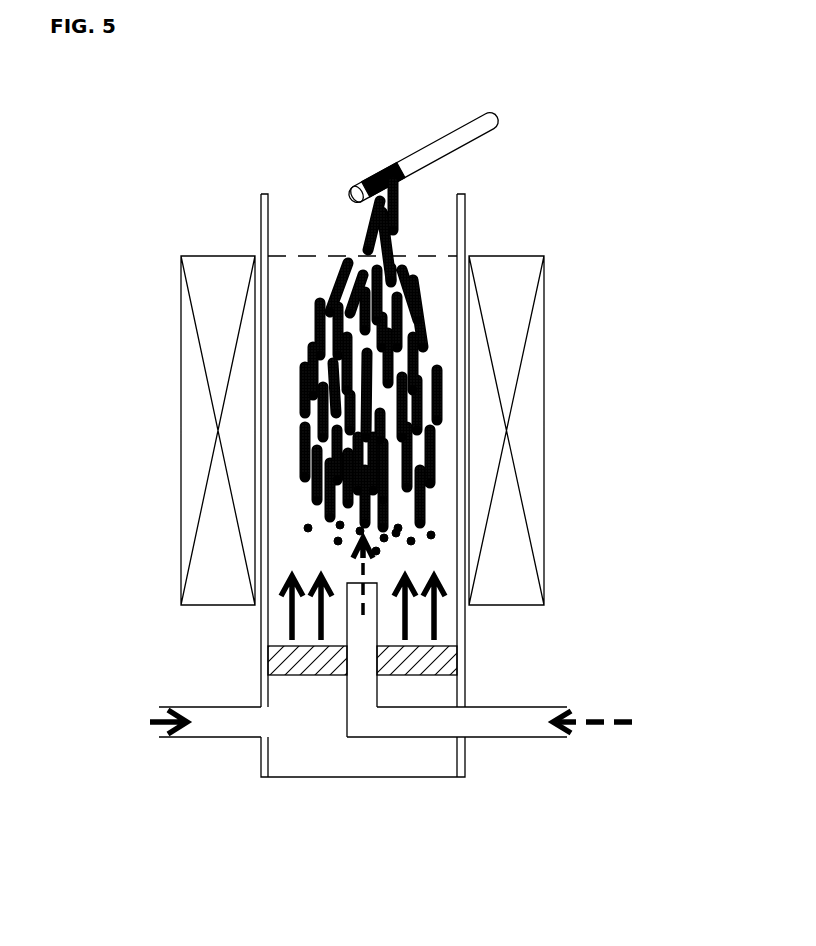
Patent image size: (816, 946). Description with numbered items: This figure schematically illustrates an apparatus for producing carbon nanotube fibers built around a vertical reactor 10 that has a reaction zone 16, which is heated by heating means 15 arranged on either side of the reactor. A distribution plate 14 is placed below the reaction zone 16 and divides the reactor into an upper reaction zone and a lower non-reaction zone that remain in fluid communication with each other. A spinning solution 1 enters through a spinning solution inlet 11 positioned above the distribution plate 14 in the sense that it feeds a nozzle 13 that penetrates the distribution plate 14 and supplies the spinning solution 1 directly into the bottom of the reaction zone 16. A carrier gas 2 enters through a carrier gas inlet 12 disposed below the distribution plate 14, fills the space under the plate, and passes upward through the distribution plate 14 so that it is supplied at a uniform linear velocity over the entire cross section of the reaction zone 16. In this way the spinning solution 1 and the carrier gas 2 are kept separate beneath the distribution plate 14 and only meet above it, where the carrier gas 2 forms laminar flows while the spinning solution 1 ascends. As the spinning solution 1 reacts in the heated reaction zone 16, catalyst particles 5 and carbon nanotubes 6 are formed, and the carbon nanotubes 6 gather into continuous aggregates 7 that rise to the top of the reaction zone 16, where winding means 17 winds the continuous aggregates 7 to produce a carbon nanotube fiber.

The spinning solution 1 is at (365, 572).
The carrier gas 2 is at (292, 622).
The catalyst particles 5 is at (303, 528).
The carbon nanotubes 6 is at (303, 378).
The continuous aggregates of carbon nanotubes 7 is at (391, 176).
The vertical reactor 10 is at (467, 231).
The spinning solution inlet 11 is at (510, 740).
The carrier gas inlet 12 is at (215, 740).
The nozzle 13 is at (380, 628).
The distribution plate 14 is at (283, 660).
The heating means 15 is at (200, 442).
The reaction zone 16 is at (285, 308).
The winding means 17 is at (465, 145).